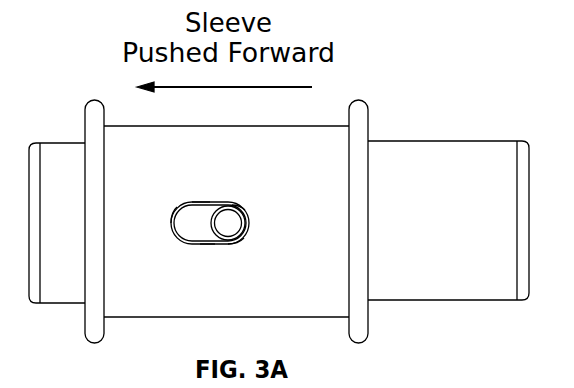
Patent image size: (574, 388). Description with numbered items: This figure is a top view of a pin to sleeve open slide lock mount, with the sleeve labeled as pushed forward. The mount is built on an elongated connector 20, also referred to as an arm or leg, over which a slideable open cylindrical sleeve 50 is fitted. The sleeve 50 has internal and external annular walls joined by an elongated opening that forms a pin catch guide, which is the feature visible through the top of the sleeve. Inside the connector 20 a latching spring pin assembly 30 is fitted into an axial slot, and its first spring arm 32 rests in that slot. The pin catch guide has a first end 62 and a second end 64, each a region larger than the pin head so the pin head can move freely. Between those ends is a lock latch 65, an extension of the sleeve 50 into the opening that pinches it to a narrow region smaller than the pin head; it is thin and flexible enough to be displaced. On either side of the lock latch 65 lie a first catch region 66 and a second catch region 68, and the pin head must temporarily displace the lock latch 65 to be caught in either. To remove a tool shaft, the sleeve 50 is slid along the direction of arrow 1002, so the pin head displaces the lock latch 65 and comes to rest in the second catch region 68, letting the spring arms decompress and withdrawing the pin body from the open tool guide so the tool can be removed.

The elongated connector 20 is at (440, 273).
The slideable open cylindrical sleeve 50 is at (150, 305).
The first spring arm 32 is at (209, 233).
The latching spring pin assembly 30 is at (227, 223).
The first end of the locking catch guide 62 is at (173, 229).
The second end of the locking catch guide 64 is at (245, 210).
The lock latch 65 is at (207, 247).
The first catch region 66 is at (188, 200).
The second catch region 68 is at (235, 248).
The arrow 1002 is at (312, 87).